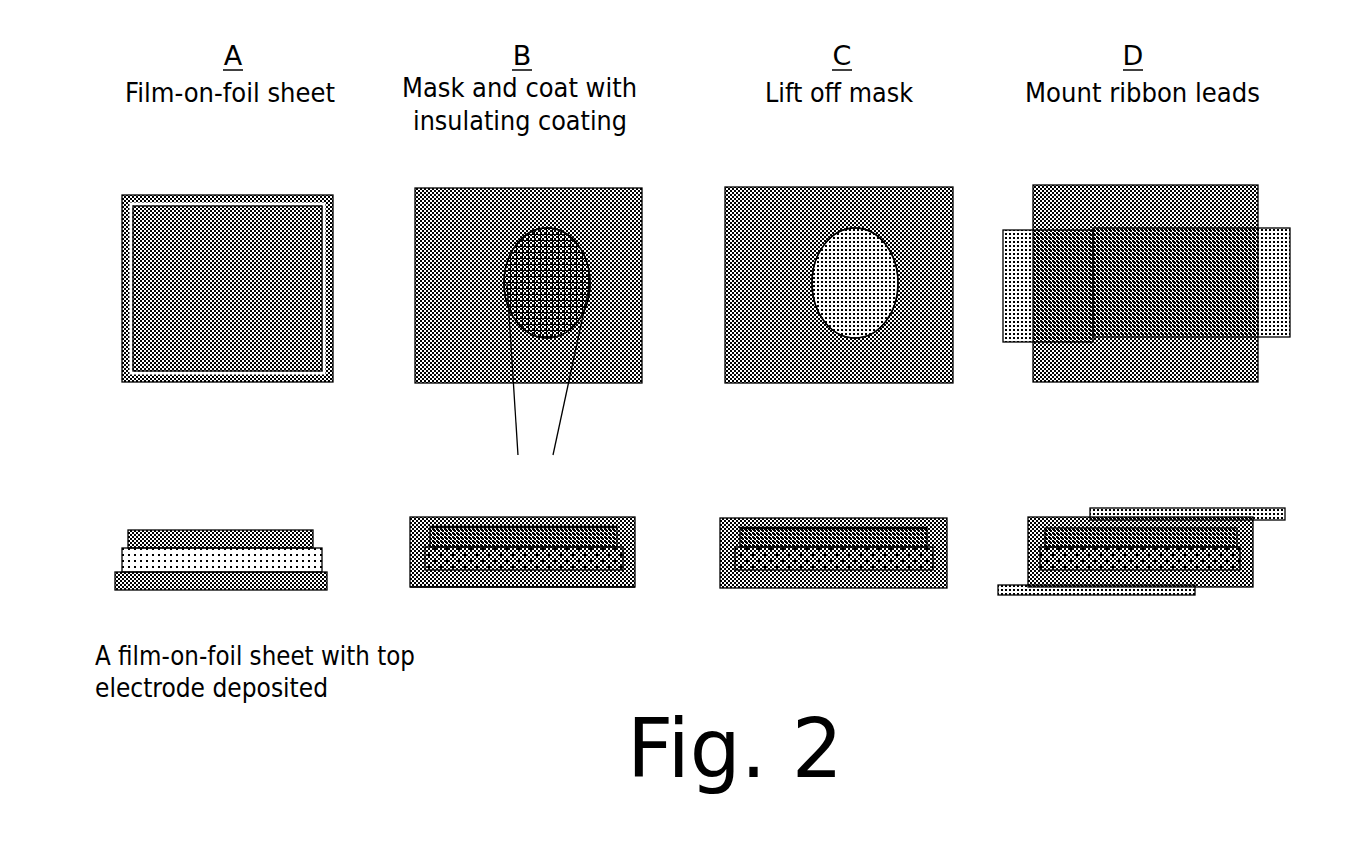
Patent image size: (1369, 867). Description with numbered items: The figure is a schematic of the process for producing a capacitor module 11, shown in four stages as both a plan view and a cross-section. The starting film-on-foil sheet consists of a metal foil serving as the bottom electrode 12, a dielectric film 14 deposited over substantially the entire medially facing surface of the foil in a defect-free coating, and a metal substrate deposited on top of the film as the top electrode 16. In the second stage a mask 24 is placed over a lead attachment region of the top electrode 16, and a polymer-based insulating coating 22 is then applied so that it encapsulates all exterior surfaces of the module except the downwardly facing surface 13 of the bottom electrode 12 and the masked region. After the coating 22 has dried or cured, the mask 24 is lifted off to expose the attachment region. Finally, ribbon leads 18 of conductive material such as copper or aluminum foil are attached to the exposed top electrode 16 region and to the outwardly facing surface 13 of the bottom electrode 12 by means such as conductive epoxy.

The capacitor module 11 is at (1266, 574).
The bottom electrode 12 is at (118, 573).
The downwardly facing surface of the bottom electrode 13 is at (598, 588).
The dielectric film 14 is at (213, 560).
The top electrode 16 is at (270, 338).
The leads 18 is at (1010, 585).
The insulating coating 22 is at (613, 367).
The mask 24 is at (594, 269).